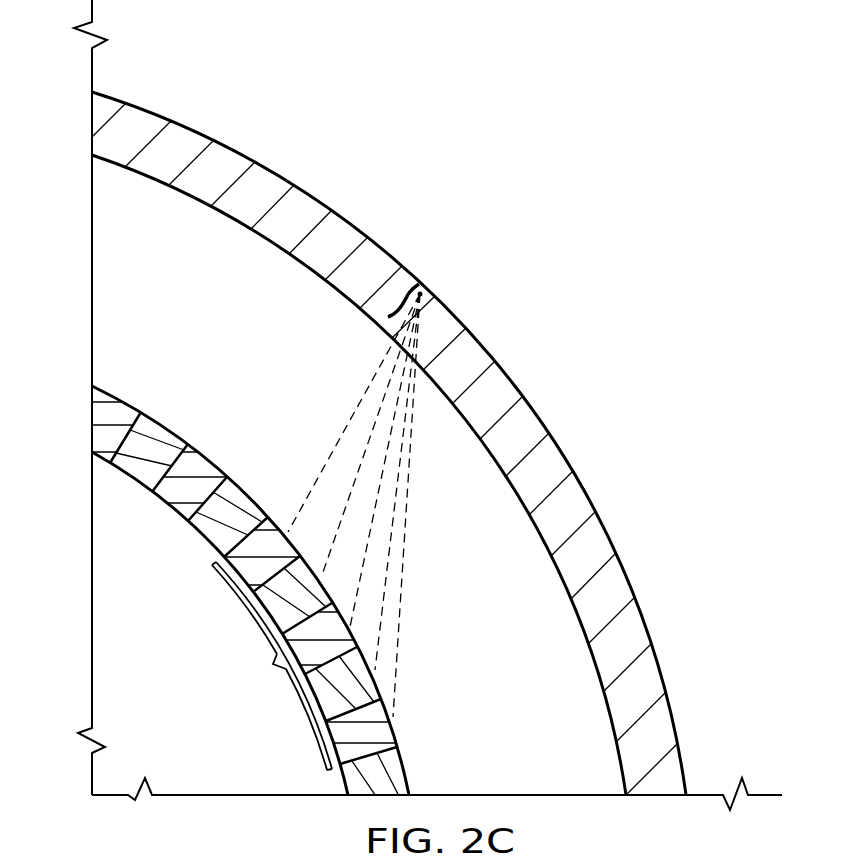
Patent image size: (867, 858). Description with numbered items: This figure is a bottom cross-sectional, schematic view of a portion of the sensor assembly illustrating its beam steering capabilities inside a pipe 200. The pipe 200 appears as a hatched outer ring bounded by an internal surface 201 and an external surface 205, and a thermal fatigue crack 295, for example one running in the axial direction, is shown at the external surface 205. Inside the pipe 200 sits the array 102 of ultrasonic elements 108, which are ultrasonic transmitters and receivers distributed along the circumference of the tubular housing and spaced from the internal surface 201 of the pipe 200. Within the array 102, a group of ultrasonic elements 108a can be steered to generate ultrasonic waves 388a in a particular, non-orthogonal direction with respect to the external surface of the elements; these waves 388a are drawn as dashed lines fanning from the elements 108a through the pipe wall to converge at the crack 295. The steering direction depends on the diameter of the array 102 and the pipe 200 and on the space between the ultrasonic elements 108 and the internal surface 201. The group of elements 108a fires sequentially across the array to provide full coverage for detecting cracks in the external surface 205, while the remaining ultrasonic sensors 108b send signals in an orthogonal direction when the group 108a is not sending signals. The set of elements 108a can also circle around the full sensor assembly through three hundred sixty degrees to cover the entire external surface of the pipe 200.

The pipe 200 is at (404, 106).
The external surface 205 is at (507, 373).
The internal surface 201 is at (578, 620).
The thermal fatigue cracking 295 is at (407, 283).
The ultrasonic waves 388a is at (423, 573).
The array of ultrasonic elements 102 is at (112, 488).
The ultrasonic elements 108 is at (193, 657).
The ultrasonic sensors 108b is at (165, 490).
The group of ultrasonic elements 108a is at (272, 666).